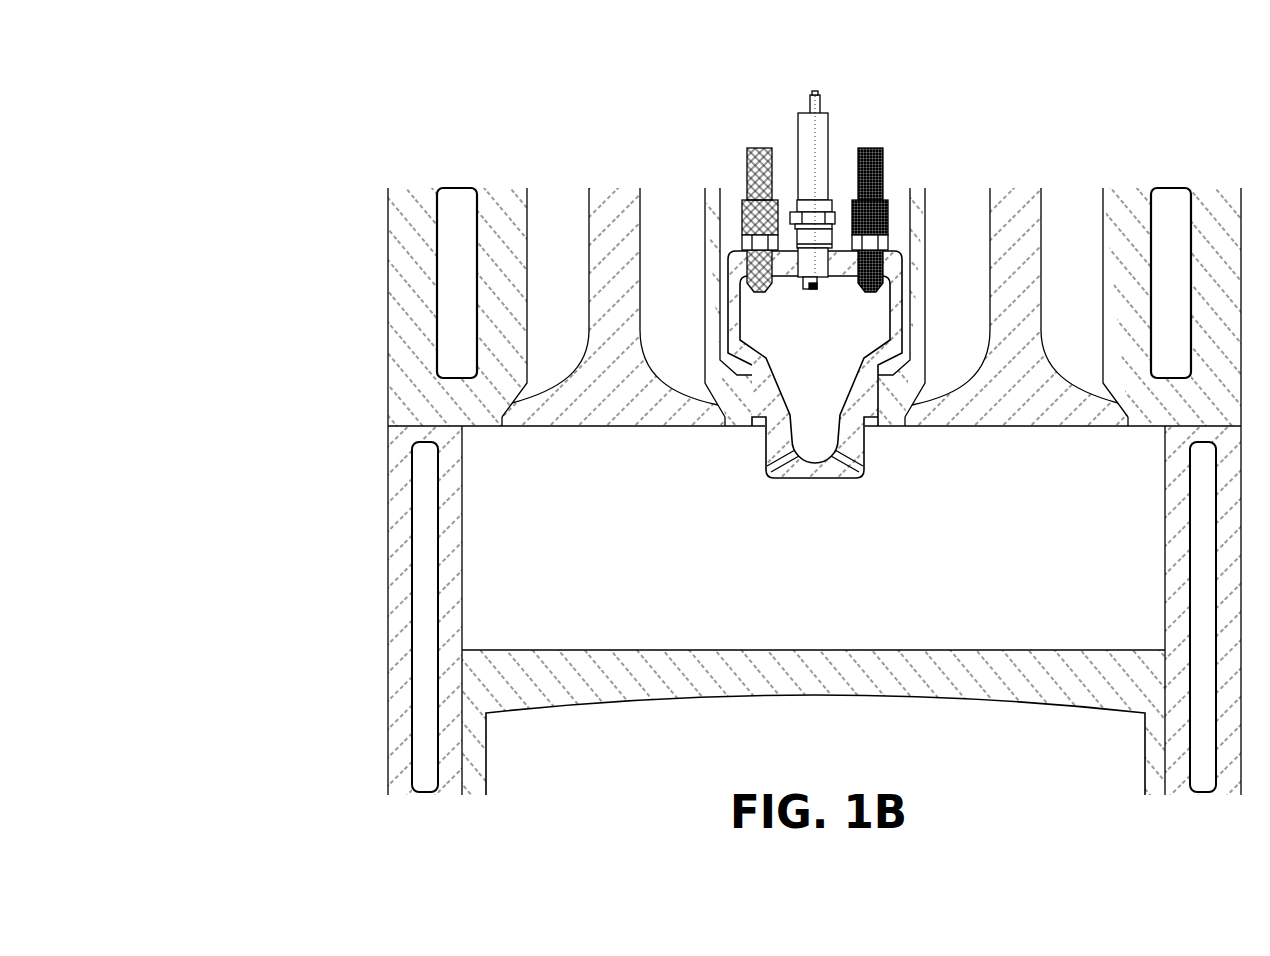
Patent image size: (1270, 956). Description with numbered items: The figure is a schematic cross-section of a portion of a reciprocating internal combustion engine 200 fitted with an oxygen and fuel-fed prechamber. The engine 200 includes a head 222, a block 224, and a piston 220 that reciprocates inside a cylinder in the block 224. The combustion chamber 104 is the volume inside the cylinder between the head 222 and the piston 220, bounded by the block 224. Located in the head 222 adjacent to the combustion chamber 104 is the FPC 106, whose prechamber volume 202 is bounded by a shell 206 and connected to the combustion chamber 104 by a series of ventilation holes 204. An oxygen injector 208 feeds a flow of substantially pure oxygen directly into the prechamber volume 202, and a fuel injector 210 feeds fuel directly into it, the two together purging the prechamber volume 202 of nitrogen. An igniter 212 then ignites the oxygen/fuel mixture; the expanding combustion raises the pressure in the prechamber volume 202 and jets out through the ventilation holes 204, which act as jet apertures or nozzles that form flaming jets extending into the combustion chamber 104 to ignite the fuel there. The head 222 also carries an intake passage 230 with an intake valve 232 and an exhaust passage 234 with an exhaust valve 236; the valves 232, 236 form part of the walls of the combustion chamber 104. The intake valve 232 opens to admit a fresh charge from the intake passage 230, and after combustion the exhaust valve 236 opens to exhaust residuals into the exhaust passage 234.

The engine 200 is at (732, 422).
The prechamber volume 202 is at (836, 365).
The ventilation holes 204 is at (768, 470).
The shell 206 is at (766, 443).
The oxygen injector 208 is at (747, 153).
The fuel injector 210 is at (884, 154).
The igniter 212 is at (800, 113).
The combustion chamber 104 is at (834, 604).
The FPC 106 is at (830, 507).
The piston 220 is at (643, 650).
The head 222 is at (388, 322).
The block 224 is at (390, 530).
The intake passage 230 is at (560, 220).
The intake valve 232 is at (598, 390).
The exhaust passage 234 is at (1080, 218).
The exhaust valve 236 is at (1005, 405).